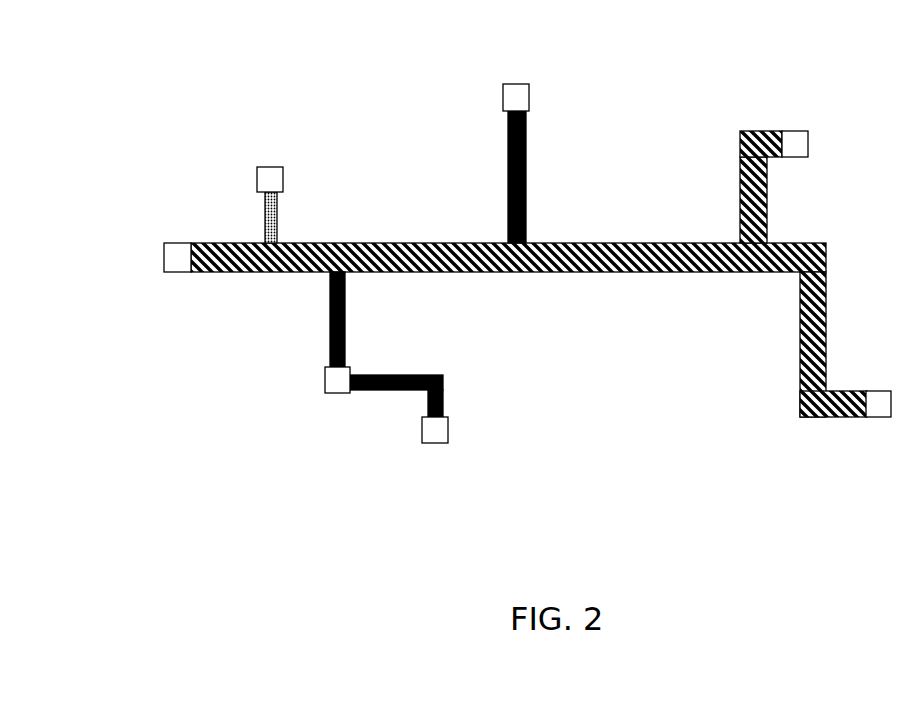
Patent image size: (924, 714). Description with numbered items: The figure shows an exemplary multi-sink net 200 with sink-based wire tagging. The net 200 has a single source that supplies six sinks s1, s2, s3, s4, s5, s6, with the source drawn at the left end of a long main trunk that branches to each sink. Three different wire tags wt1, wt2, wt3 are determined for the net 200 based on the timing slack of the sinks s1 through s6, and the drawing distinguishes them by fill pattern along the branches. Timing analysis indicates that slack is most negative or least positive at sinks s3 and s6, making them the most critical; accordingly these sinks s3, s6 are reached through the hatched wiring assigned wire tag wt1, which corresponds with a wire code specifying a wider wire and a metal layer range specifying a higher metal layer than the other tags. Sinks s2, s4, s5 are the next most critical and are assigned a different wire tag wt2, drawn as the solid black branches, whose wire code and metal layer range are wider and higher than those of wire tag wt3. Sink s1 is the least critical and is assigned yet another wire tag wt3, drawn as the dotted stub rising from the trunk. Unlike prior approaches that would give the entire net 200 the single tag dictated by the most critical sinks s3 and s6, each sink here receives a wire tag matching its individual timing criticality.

The multi-sink net 200 is at (108, 85).
The element source is at (164, 258).
The wire tag wt1 is at (615, 242).
The wire tag wt2 is at (508, 196).
The wire tag wt3 is at (265, 225).
The sink s1 is at (270, 167).
The sink s2 is at (516, 84).
The sink s3 is at (796, 131).
The sink s4 is at (336, 393).
The sink s5 is at (437, 443).
The sink s6 is at (878, 417).